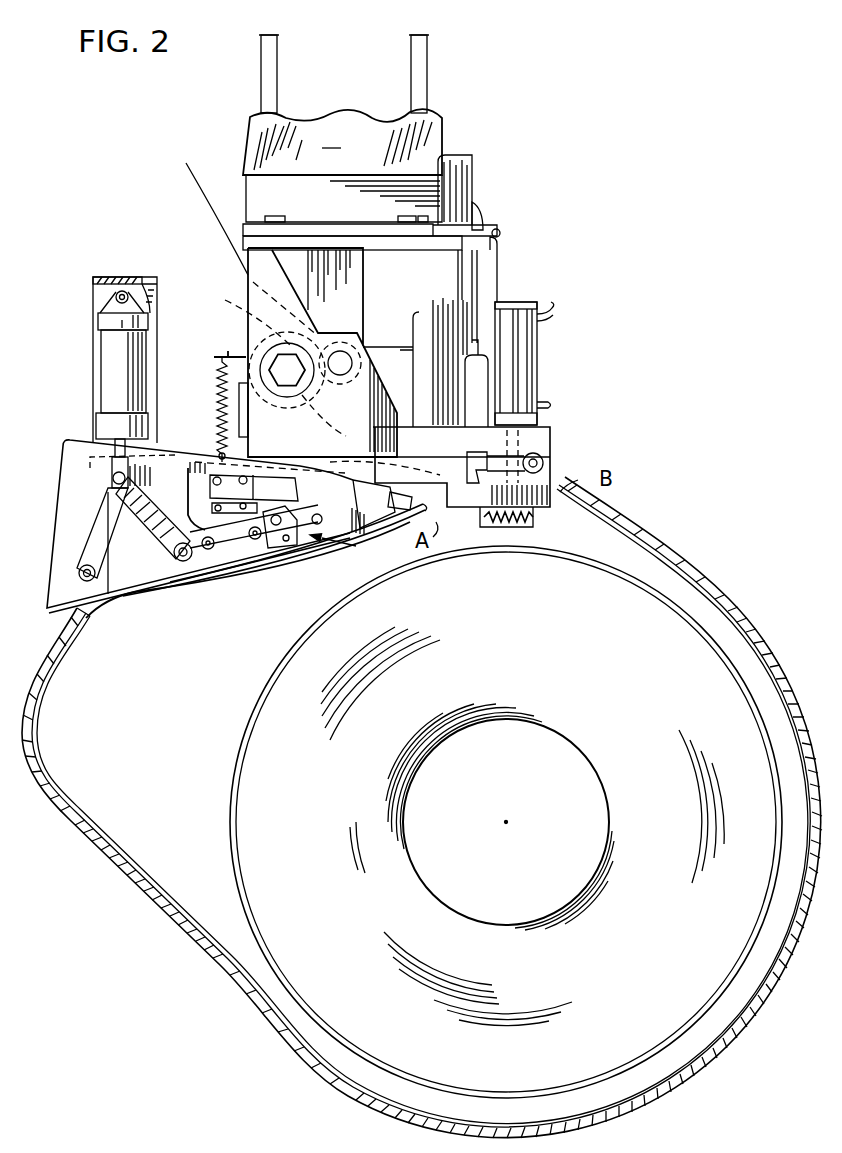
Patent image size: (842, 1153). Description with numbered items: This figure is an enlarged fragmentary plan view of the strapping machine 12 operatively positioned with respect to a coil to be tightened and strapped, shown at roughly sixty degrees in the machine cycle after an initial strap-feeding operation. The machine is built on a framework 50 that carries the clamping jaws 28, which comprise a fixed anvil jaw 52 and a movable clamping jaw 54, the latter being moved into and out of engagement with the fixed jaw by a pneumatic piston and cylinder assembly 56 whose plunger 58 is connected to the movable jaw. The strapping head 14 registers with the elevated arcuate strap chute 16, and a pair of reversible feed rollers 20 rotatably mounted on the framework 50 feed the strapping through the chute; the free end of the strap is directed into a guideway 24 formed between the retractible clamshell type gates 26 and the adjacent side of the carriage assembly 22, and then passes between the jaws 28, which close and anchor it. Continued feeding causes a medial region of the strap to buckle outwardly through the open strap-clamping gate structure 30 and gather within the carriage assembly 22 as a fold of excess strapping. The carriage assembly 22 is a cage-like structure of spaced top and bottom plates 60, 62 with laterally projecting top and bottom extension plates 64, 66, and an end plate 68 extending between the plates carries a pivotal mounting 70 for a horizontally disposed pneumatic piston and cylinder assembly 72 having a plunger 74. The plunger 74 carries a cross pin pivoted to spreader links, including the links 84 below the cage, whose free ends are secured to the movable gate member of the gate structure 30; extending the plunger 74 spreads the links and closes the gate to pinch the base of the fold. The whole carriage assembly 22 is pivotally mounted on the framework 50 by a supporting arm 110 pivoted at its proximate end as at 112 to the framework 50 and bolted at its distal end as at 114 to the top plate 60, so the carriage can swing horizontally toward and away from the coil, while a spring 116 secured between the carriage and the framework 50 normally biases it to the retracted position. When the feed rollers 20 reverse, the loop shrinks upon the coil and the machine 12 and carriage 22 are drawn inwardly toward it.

The strapping machine 12 is at (496, 174).
The strapping head 14 is at (560, 492).
The arcuate strap chute 16 is at (717, 572).
The reversible feed rollers 20 is at (347, 386).
The carriage assembly 22 is at (137, 543).
The guideway 24 is at (200, 583).
The retractible clamshell type gates 26 is at (140, 601).
The clamping jaws 28 is at (538, 526).
The strap-clamping gate structure 30 is at (344, 550).
The framework 50 is at (470, 396).
The fixed anvil jaw 52 is at (90, 530).
The movable clamping jaw 54 is at (514, 528).
The pneumatic piston and cylinder assembly 56 is at (538, 341).
The plunger 58 is at (503, 437).
The top plate 60 is at (76, 441).
The bottom plate 62 is at (383, 517).
The top extension plate 64 is at (157, 285).
The bottom extension plate 66 is at (150, 383).
The end plate 68 is at (95, 277).
The pivotal mounting 70 is at (124, 292).
The pneumatic piston and cylinder assembly 72 is at (129, 386).
The plunger 74 is at (112, 468).
The spreader links 84 is at (153, 528).
The supporting arm 110 is at (467, 456).
The pivot 112 is at (544, 461).
The bolted connection 114 is at (216, 483).
The spring 116 is at (221, 418).